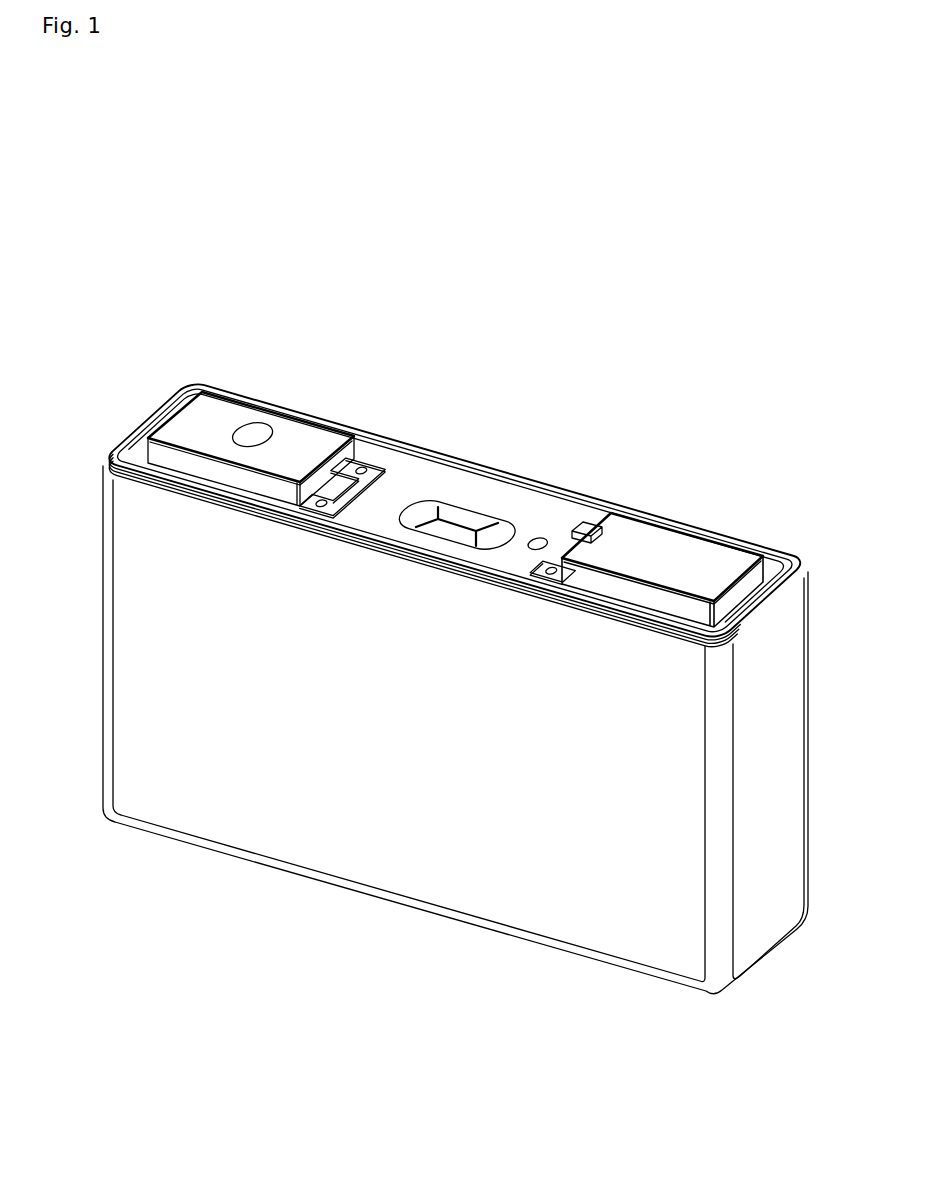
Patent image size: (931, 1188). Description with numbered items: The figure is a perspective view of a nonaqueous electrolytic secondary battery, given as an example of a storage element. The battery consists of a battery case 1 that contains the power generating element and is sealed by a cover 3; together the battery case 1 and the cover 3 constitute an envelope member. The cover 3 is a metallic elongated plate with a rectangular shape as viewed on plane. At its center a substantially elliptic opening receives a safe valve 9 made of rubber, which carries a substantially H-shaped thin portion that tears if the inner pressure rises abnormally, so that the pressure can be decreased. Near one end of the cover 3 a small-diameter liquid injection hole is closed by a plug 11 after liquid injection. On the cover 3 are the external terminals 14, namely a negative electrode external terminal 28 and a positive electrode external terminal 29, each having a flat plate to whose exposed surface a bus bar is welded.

The battery case 1 is at (433, 860).
The cover 3 is at (404, 472).
The safe valve 9 is at (472, 513).
The plug 11 is at (538, 540).
The external terminals 14 is at (456, 471).
The negative electrode external terminal 28 is at (236, 418).
The positive electrode external terminal 29 is at (632, 537).